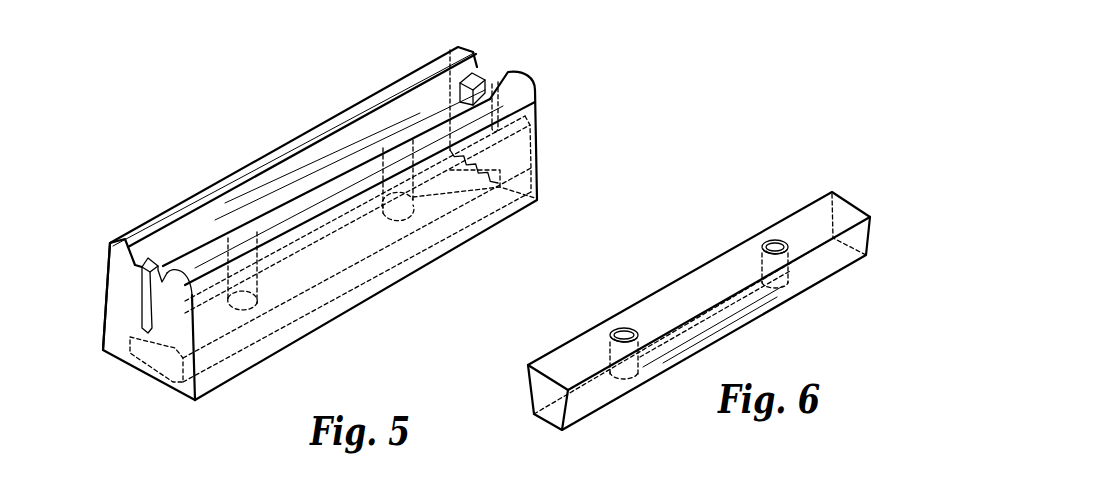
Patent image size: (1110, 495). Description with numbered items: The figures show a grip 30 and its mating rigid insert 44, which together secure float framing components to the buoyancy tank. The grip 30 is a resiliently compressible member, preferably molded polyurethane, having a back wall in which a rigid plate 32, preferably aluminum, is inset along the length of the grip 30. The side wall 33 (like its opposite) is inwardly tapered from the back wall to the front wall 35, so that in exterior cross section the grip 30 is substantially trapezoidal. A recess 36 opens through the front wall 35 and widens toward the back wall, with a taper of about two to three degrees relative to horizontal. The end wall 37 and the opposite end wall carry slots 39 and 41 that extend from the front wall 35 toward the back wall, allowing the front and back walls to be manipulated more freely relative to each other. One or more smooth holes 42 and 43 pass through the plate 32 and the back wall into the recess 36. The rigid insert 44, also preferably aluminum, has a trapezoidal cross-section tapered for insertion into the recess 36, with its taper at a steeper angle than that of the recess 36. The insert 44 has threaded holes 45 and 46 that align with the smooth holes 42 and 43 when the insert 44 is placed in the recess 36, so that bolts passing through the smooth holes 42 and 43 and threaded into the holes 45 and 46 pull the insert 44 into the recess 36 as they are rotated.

In FIG. 5, the grip 30 is at (203, 185).
In FIG. 5, the rigid plate 32 is at (172, 345).
In FIG. 5, the side wall 33 is at (519, 147).
In FIG. 5, the front wall 35 is at (280, 146).
In FIG. 5, the recess 36 is at (352, 143).
In FIG. 5, the end wall 37 is at (118, 286).
In FIG. 5, the slot 39 is at (143, 308).
In FIG. 5, the slot 41 is at (497, 86).
In FIG. 5, the smooth hole 42 is at (245, 293).
In FIG. 5, the smooth hole 43 is at (400, 198).
In FIG. 6, the rigid insert 44 is at (703, 283).
In FIG. 6, the threaded hole 45 is at (620, 328).
In FIG. 6, the threaded hole 46 is at (778, 241).